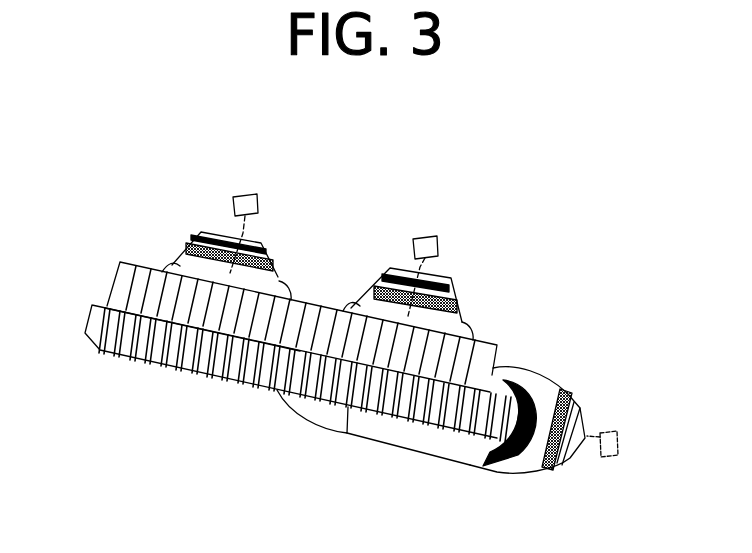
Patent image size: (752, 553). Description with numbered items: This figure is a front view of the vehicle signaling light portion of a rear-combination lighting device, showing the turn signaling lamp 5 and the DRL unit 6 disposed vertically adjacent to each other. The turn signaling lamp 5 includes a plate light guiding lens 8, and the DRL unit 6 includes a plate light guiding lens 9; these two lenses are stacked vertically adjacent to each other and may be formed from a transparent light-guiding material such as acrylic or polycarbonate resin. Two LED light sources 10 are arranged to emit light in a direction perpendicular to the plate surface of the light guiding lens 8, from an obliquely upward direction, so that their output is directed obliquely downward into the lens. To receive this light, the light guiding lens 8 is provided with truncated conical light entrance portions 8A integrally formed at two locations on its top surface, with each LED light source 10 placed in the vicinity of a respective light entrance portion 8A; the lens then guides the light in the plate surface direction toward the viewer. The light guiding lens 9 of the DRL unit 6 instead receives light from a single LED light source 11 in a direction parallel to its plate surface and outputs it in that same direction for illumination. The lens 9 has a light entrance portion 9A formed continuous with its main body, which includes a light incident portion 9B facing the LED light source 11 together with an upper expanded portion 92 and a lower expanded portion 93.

The turn signaling lamp 5 is at (317, 306).
The DRL unit 6 is at (182, 377).
The plate light guiding lens 8 is at (490, 350).
The light entrance portion 8A is at (194, 258).
The plate light guiding lens 9 is at (240, 383).
The light entrance portion 9A is at (452, 463).
The light incident portion 9B is at (563, 468).
The LED light source 10 is at (258, 194).
The LED light source 11 is at (617, 432).
The upper expanded portion 92 is at (528, 372).
The lower expanded portion 93 is at (367, 432).